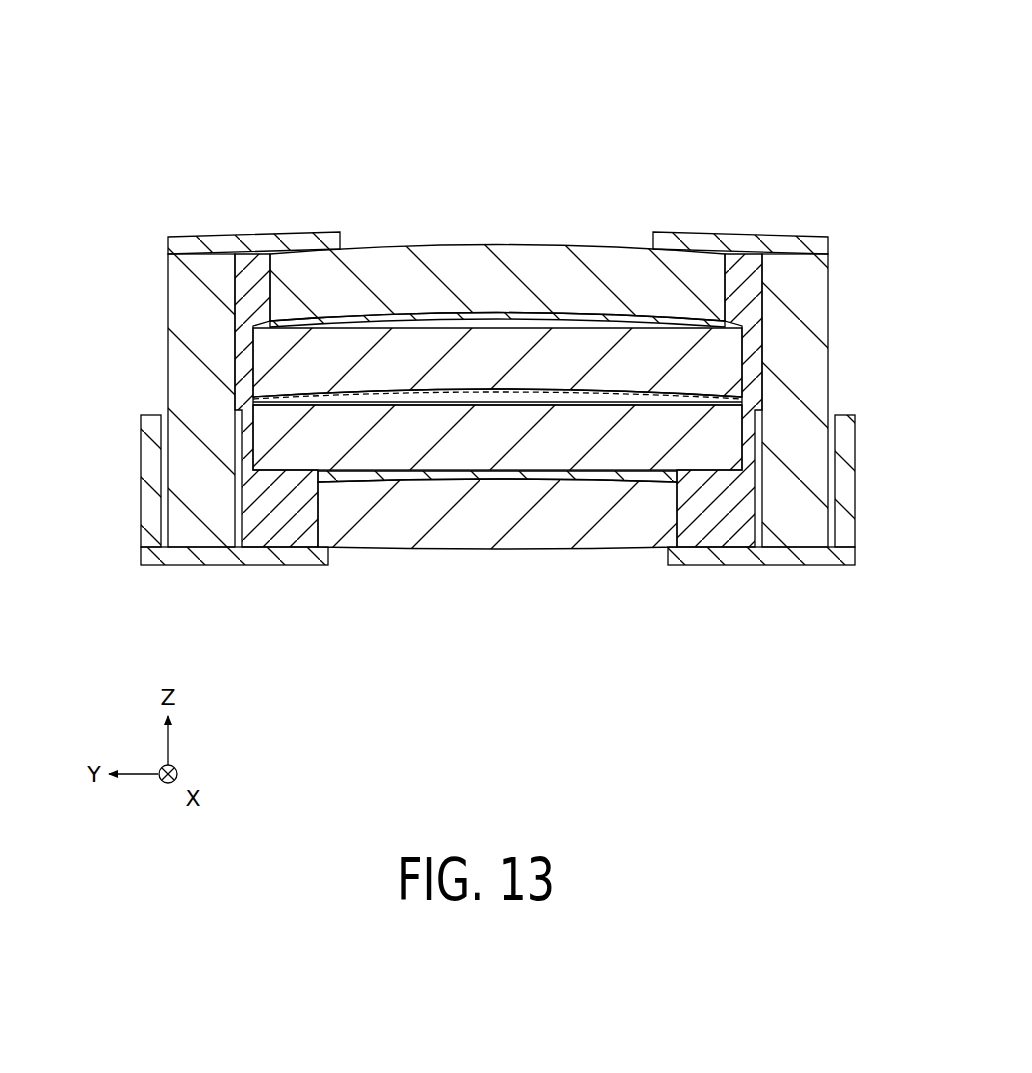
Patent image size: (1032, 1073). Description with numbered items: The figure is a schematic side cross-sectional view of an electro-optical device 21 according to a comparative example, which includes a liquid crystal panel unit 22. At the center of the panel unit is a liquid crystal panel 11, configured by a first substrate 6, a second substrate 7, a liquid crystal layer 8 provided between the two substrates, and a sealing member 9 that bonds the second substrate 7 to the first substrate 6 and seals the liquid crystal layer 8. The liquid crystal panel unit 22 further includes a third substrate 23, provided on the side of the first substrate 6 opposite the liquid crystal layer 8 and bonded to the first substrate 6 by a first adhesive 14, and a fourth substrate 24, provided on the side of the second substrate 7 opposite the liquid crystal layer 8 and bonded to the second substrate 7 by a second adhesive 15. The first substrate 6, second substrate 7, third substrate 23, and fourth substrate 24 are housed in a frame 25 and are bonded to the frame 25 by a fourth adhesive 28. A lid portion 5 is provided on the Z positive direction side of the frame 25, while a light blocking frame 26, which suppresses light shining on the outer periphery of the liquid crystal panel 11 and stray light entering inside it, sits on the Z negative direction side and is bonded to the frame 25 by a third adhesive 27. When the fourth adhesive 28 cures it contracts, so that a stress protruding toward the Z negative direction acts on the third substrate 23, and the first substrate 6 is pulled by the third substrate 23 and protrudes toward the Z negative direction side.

The electro-optical device 21 is at (824, 68).
The liquid crystal panel unit 22 is at (582, 126).
The lid portion 5 is at (317, 243).
The first substrate 6 is at (300, 432).
The second substrate 7 is at (280, 352).
The liquid crystal layer 8 is at (330, 387).
The sealing member 9 is at (255, 398).
The liquid crystal panel 11 is at (70, 323).
The first adhesive 14 is at (540, 480).
The second adhesive 15 is at (695, 318).
The third substrate 23 is at (475, 530).
The fourth substrate 24 is at (488, 268).
The frame 25 is at (207, 270).
The light blocking frame 26 is at (208, 555).
The third adhesive 27 is at (840, 452).
The fourth adhesive 28 is at (292, 525).